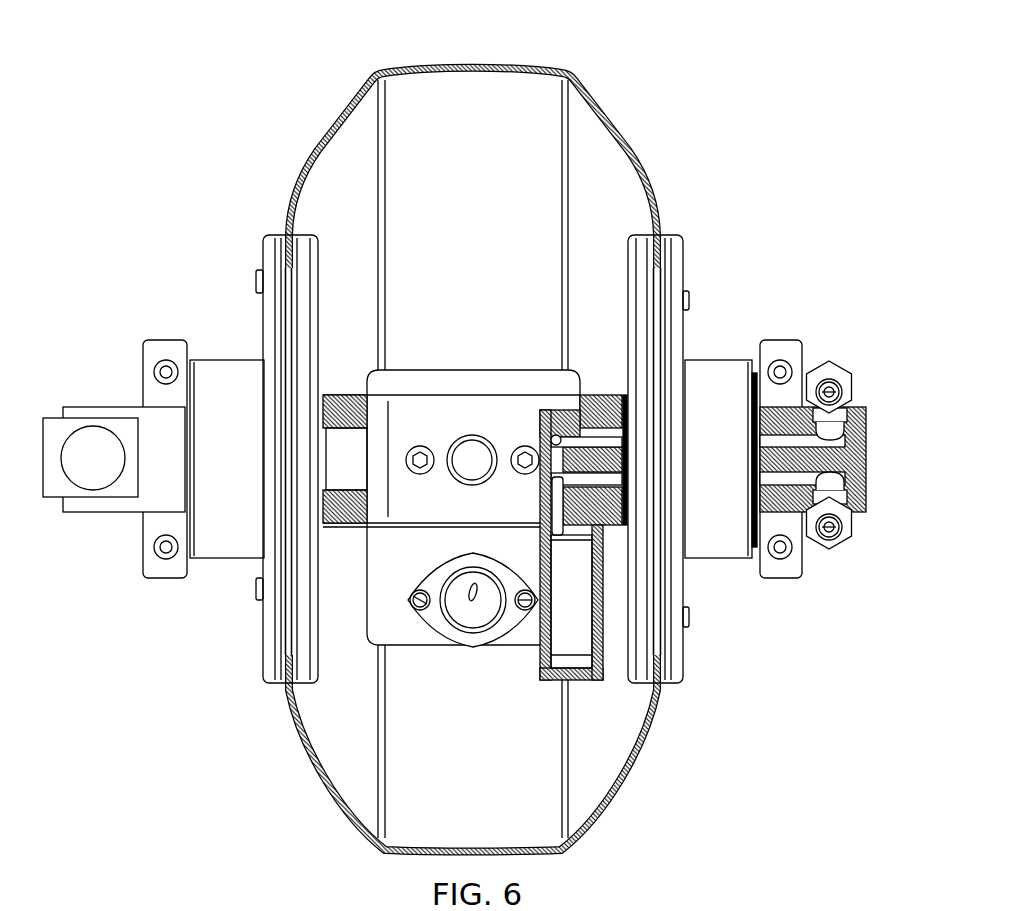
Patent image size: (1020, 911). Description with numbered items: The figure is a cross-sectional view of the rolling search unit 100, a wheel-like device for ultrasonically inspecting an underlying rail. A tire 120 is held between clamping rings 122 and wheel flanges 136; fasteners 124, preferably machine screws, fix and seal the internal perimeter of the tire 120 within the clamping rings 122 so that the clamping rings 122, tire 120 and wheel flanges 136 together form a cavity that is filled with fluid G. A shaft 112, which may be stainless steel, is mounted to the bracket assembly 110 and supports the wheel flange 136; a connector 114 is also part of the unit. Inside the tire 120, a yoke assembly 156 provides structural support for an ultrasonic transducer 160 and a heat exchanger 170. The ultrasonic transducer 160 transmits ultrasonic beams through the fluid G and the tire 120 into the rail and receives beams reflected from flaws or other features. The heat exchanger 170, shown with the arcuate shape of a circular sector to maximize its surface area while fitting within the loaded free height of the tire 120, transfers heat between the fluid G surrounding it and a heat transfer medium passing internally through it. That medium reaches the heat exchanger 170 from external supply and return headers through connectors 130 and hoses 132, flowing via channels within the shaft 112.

The rolling search unit 100 is at (248, 86).
The fluid G is at (362, 127).
The bracket assembly 110 is at (157, 579).
The shaft 112 is at (868, 455).
The connector 114 is at (92, 492).
The tire 120 is at (585, 90).
The clamping ring 122 is at (279, 233).
The fasteners 124 is at (256, 284).
The connectors 130 is at (832, 364).
The hoses 132 is at (867, 418).
The wheel flange 136 is at (236, 359).
The yoke assembly 156 is at (520, 368).
The ultrasonic transducer 160 is at (405, 648).
The heat exchanger 170 is at (550, 683).